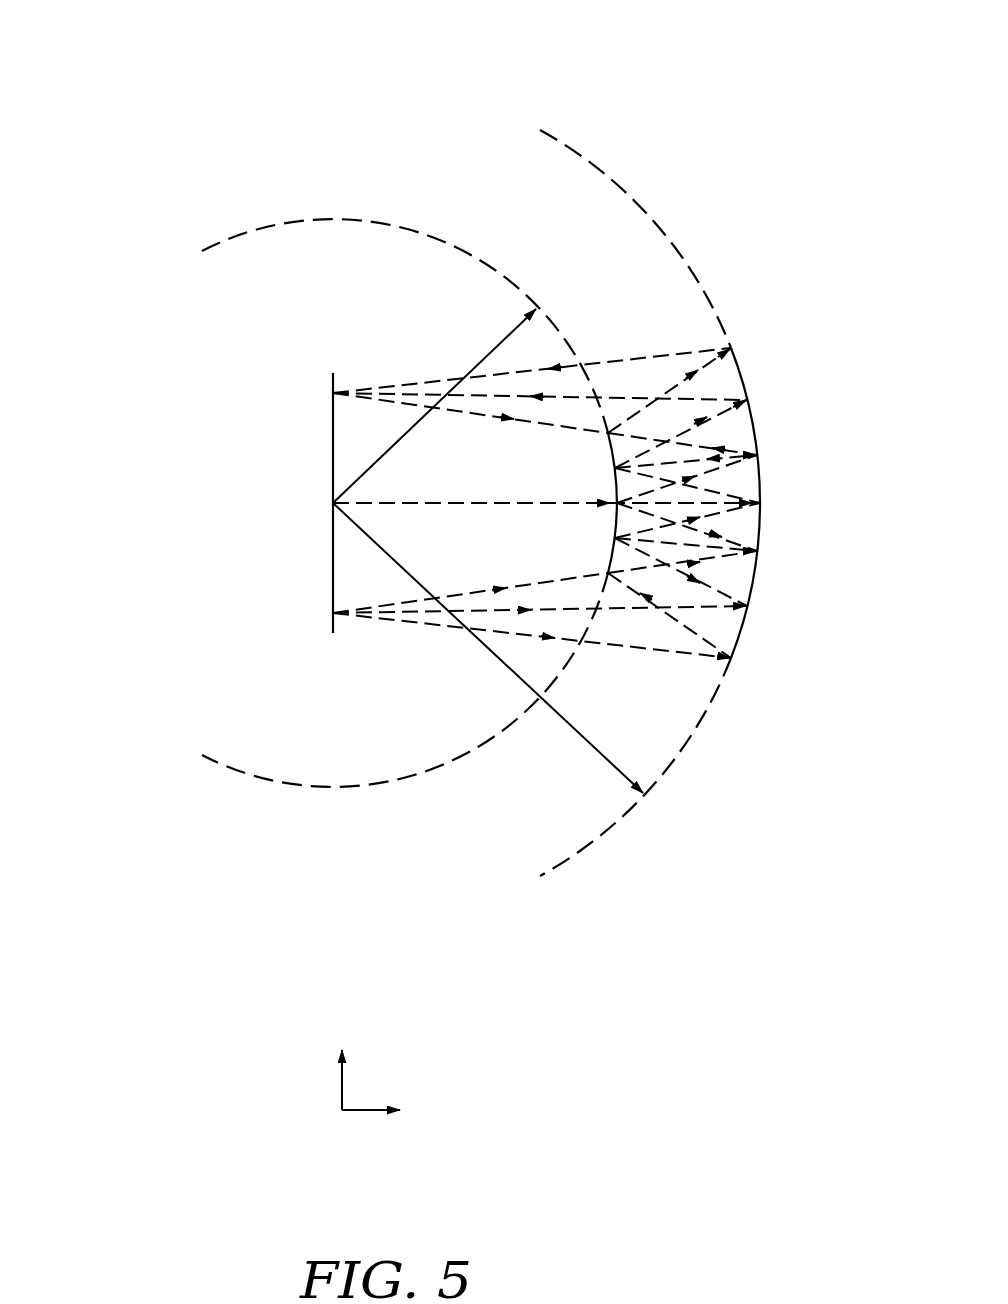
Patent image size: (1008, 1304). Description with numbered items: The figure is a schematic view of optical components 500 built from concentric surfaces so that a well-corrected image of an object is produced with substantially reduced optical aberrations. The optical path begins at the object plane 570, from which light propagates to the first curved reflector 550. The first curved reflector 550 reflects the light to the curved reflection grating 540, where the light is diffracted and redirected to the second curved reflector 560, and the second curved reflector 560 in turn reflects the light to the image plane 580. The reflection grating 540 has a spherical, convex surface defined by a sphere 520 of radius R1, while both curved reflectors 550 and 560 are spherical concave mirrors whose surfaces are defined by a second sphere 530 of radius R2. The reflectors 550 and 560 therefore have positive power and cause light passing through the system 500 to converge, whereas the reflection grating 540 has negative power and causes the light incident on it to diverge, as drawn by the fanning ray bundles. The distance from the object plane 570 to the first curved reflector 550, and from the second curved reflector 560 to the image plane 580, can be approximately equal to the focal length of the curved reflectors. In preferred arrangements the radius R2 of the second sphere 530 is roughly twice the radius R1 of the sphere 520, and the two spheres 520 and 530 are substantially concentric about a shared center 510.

The optical components 500 is at (142, 84).
The shared center 510 is at (320, 503).
The sphere 520 is at (331, 210).
The second sphere 530 is at (612, 170).
The curved reflection grating 540 is at (600, 483).
The first curved reflector 550 is at (773, 570).
The second curved reflector 560 is at (770, 406).
The object plane 570 is at (320, 613).
The image plane 580 is at (320, 393).